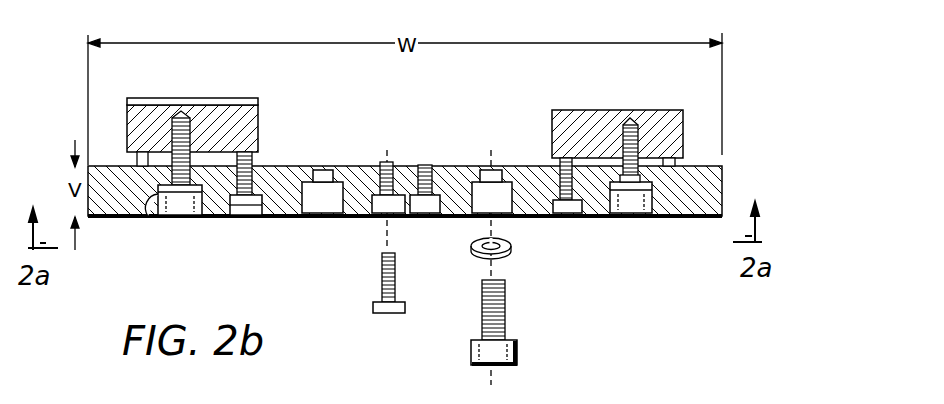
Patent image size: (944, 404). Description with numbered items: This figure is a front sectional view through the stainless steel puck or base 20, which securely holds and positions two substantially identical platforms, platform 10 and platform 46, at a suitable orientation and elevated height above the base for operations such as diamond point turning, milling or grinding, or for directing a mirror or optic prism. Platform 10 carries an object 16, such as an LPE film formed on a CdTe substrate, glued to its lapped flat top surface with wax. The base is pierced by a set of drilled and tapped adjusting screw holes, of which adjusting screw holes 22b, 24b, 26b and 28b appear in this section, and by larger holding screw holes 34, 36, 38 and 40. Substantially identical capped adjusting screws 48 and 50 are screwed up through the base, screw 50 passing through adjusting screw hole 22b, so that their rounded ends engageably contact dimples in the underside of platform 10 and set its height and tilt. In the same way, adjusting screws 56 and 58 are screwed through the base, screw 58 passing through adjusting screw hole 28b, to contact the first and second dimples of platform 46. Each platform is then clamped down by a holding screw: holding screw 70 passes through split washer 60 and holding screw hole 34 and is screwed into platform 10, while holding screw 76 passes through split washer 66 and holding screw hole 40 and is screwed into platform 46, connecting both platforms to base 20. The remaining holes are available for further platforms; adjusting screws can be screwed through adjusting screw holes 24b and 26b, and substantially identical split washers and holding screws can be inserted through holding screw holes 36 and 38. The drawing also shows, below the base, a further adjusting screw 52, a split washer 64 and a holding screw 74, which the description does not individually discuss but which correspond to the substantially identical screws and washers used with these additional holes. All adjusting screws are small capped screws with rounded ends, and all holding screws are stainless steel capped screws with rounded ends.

The platform 10 is at (212, 113).
The object 16 is at (166, 98).
The base 20 is at (756, 172).
The adjusting screw hole 22b is at (247, 226).
The adjusting screw hole 24b is at (373, 236).
The adjusting screw hole 26b is at (436, 236).
The adjusting screw hole 28b is at (583, 222).
The holding screw hole 34 is at (157, 205).
The holding screw hole 36 is at (322, 236).
The holding screw hole 38 is at (511, 230).
The holding screw hole 40 is at (663, 198).
The platform 46 is at (538, 109).
The adjusting screw 48 is at (135, 165).
The adjusting screw 50 is at (245, 222).
The screw 52 is at (372, 308).
The adjusting screw 56 is at (683, 158).
The adjusting screw 58 is at (576, 216).
The split washer 60 is at (147, 220).
The lock washer 64 is at (504, 255).
The split washer 66 is at (616, 216).
The holding screw 70 is at (178, 222).
The socket head screw 74 is at (470, 352).
The holding screw 76 is at (654, 190).